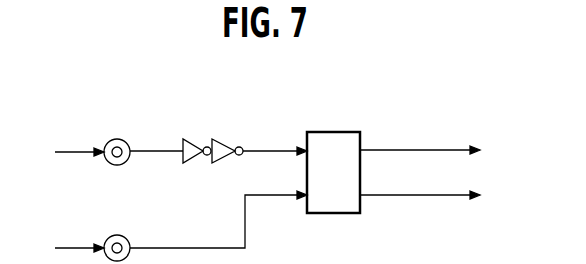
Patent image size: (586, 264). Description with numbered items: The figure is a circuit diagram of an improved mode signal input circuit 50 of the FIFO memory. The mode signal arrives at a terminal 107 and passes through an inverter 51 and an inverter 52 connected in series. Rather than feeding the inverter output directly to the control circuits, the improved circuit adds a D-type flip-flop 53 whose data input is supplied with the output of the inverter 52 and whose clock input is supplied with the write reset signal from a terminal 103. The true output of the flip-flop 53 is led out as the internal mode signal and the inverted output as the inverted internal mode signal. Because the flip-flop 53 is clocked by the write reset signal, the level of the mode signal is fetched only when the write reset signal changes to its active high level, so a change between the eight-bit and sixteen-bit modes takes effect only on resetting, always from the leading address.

The mode signal input circuit 50 is at (442, 101).
The inverter 51 is at (186, 138).
The inverter 52 is at (215, 138).
The D-type flip-flop 53 is at (360, 134).
The terminal 103 is at (127, 237).
The terminal 107 is at (120, 139).